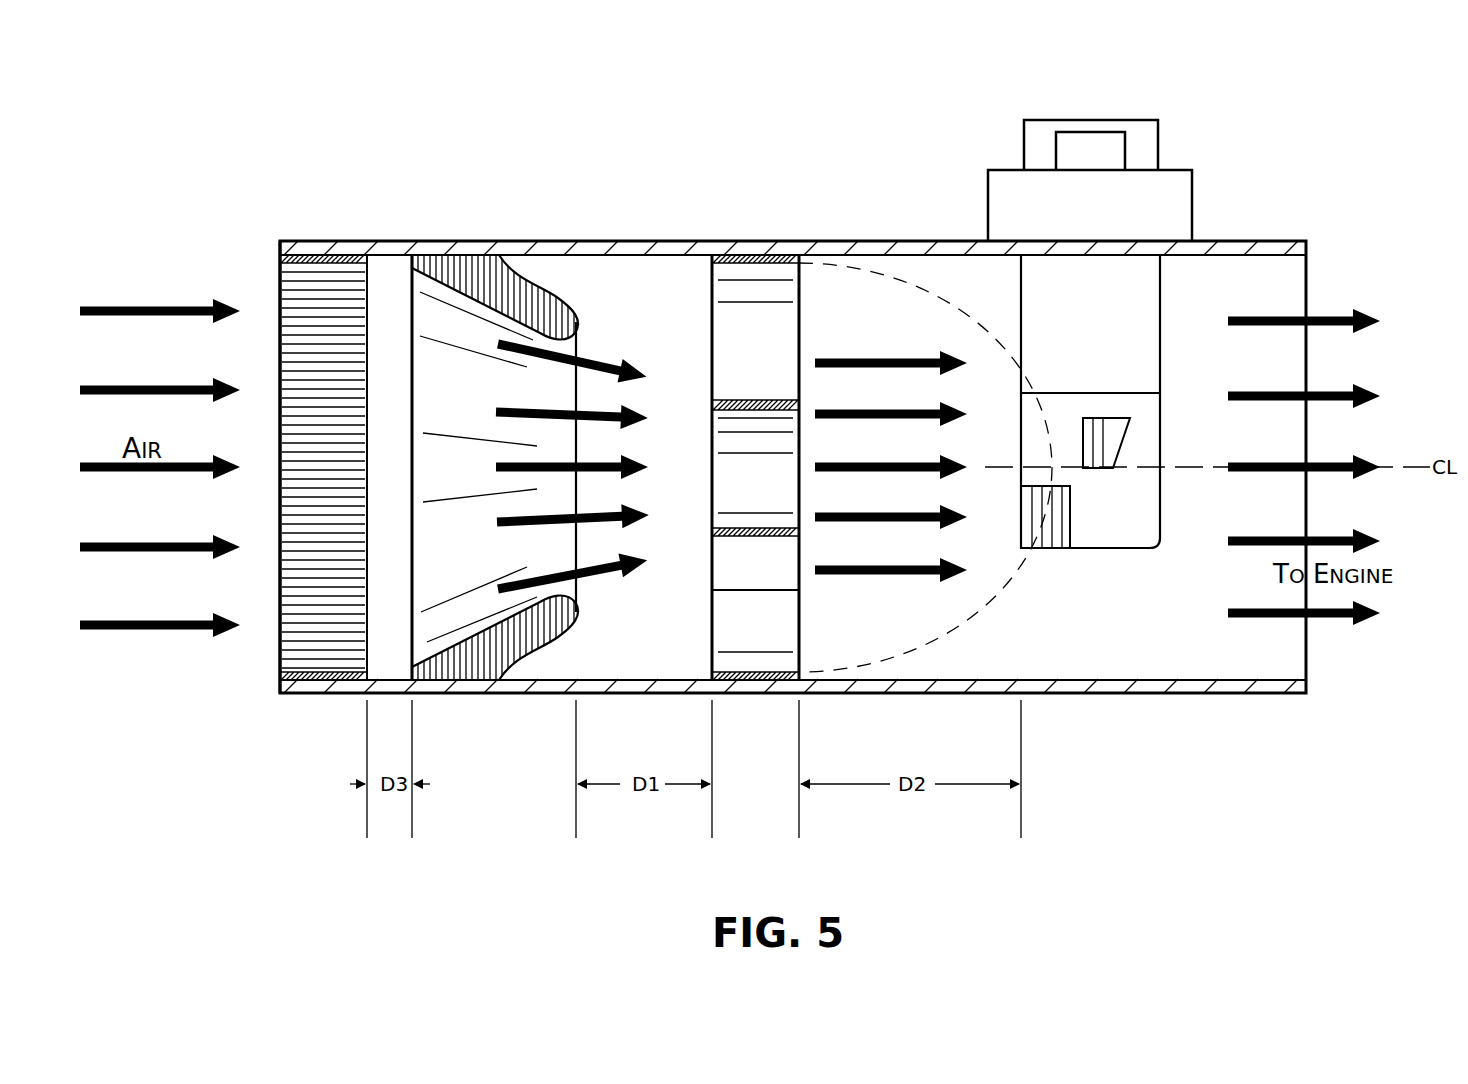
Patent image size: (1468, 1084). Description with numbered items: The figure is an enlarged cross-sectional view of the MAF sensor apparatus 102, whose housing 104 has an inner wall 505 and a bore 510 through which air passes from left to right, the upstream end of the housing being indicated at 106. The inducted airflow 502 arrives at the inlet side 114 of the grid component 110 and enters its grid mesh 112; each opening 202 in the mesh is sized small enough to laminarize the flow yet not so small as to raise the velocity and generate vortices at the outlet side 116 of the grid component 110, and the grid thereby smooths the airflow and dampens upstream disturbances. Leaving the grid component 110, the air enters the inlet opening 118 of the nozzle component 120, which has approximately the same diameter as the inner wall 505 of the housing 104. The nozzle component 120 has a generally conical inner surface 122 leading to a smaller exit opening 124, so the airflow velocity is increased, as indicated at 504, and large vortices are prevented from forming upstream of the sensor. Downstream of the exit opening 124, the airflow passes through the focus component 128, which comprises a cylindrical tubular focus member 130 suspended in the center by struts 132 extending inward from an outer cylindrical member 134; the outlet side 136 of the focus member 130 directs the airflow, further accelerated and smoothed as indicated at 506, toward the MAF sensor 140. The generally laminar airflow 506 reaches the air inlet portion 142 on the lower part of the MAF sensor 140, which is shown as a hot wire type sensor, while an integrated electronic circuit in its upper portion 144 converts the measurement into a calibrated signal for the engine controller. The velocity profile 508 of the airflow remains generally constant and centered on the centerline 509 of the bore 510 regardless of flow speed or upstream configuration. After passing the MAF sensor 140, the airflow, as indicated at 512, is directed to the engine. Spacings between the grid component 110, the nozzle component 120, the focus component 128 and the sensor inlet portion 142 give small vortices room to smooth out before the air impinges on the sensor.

The MAF sensor apparatus 102 is at (137, 92).
The housing 104 is at (612, 240).
The inlet 106 is at (243, 248).
The grid component 110 is at (282, 247).
The grid mesh 112 is at (250, 355).
The inlet side 114 is at (157, 516).
The outlet side 116 is at (380, 408).
The inlet opening 118 is at (425, 592).
The nozzle component 120 is at (545, 648).
The conical inner surface 122 is at (494, 467).
The exit opening 124 is at (583, 394).
The focus component 128 is at (800, 282).
The focus member 130 is at (725, 538).
The struts 132 is at (780, 592).
The outer cylindrical member 134 is at (752, 253).
The outlet side 136 is at (804, 480).
The MAF sensor 140 is at (1120, 100).
The air inlet portion 142 is at (1113, 550).
The upper portion 144 is at (1192, 170).
The opening 202 is at (280, 290).
The inducted airflow 502 is at (136, 290).
The increased velocity airflow 504 is at (610, 592).
The inner wall 505 is at (562, 257).
The airflow 506 is at (911, 318).
The velocity profile 508 is at (960, 622).
The centerline 509 is at (1178, 465).
The bore 510 is at (1168, 630).
The airflow to engine 512 is at (1345, 632).